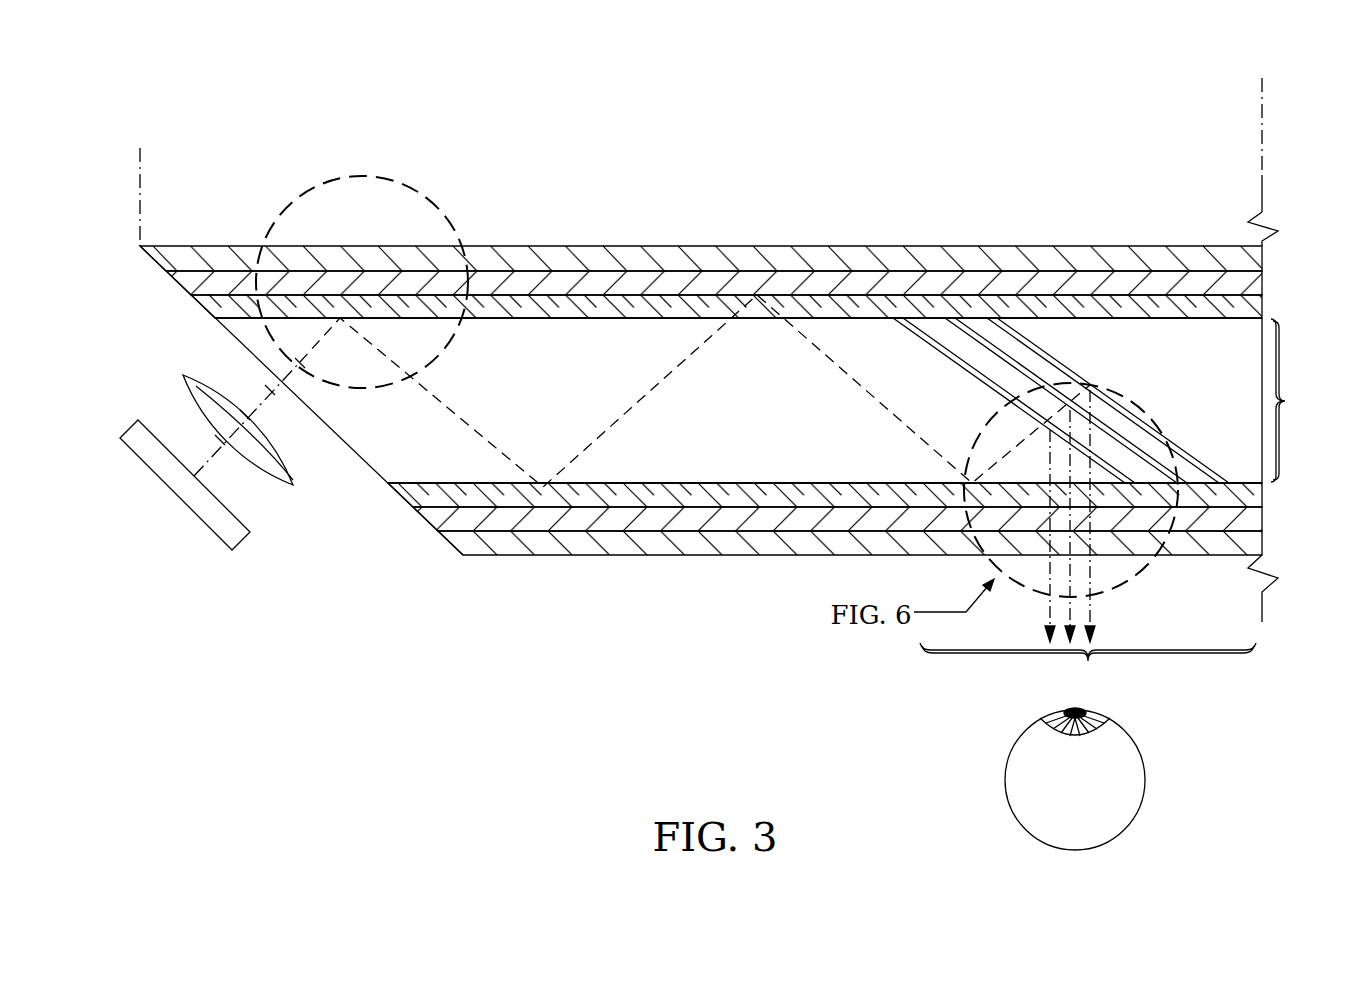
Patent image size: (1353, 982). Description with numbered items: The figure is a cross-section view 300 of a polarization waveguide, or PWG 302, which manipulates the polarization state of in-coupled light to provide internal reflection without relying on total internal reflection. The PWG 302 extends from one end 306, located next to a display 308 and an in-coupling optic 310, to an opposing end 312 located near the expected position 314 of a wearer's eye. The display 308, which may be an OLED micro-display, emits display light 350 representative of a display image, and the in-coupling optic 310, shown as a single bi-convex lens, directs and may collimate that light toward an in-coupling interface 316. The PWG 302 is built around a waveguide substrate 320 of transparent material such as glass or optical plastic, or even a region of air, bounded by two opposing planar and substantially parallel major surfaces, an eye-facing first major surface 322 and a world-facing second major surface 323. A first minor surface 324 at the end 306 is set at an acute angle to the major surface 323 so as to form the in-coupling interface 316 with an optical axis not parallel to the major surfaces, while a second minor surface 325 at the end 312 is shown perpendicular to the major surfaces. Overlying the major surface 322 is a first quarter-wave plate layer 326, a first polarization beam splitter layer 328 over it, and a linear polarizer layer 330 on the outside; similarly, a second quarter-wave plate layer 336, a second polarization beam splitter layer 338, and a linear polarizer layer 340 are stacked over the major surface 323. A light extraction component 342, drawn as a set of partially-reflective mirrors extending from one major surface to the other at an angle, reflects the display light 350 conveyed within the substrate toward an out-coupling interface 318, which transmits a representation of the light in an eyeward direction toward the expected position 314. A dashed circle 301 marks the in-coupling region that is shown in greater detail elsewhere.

The cross-section view 300 is at (470, 82).
The input coupling region 301 is at (325, 180).
The polarization waveguide 302 is at (1026, 236).
The end 306 is at (136, 163).
The display 308 is at (146, 464).
The in-coupling optic 310 is at (296, 486).
The opposing end 312 is at (1270, 97).
The expected position of a wearer's eye 314 is at (1006, 777).
The in-coupling interface 316 is at (1306, 400).
The out-coupling interface 318 is at (1088, 542).
The waveguide substrate 320 is at (787, 404).
The first major surface 322 is at (742, 482).
The second major surface 323 is at (549, 322).
The first minor surface 324 is at (353, 450).
The second minor surface 325 is at (1262, 404).
The first quarter-wave plate layer 326 is at (866, 310).
The first polarization beam splitter layer 328 is at (1256, 285).
The linear polarizer layer 330 is at (668, 245).
The second quarter-wave plate layer 336 is at (846, 490).
The second polarization beam splitter layer 338 is at (1256, 519).
The linear polarizer layer 340 is at (661, 554).
The light extraction component 342 is at (1104, 376).
The display light 350 is at (662, 398).